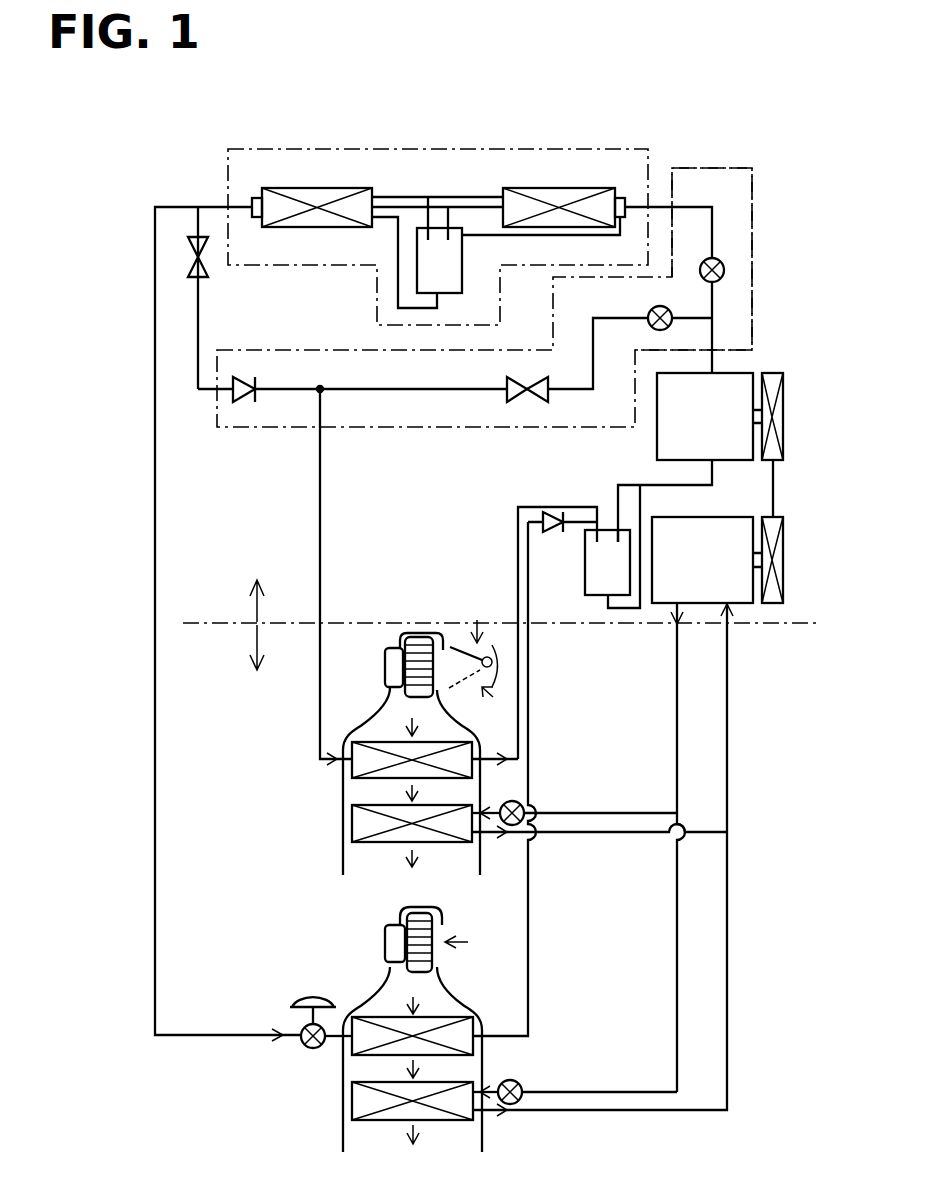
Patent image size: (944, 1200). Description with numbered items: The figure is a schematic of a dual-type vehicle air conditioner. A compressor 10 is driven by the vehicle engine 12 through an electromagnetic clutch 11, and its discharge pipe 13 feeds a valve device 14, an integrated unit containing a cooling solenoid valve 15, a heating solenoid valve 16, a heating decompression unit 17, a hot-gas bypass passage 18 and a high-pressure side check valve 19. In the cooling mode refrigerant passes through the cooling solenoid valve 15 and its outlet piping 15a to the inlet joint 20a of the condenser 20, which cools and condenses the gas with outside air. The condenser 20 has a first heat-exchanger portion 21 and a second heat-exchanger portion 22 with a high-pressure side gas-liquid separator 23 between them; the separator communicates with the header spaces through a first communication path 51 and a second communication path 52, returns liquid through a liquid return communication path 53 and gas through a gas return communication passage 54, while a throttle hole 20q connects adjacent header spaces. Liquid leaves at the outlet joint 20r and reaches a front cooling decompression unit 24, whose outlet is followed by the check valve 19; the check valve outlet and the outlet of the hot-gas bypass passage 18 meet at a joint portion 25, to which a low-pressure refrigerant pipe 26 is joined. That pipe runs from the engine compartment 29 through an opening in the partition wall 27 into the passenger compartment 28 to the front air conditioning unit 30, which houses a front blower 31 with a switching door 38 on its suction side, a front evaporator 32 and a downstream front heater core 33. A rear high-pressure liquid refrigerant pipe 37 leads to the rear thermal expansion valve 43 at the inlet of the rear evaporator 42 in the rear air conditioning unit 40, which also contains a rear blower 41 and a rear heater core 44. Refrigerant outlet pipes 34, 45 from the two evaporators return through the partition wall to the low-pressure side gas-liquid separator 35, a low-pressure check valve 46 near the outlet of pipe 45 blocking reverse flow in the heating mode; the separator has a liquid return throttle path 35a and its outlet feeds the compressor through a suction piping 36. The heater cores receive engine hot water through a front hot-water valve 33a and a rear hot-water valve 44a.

The compressor 10 is at (736, 370).
The electromagnetic clutch 11 is at (785, 430).
The vehicle engine 12 is at (737, 600).
The discharge pipe 13 is at (713, 352).
The valve device 14 is at (760, 198).
The cooling solenoid valve 15 is at (725, 270).
The outlet piping 15a is at (712, 237).
The heating solenoid valve 16 is at (660, 306).
The heating decompression unit 17 is at (530, 402).
The hot-gas bypass passage 18 is at (460, 392).
The high-pressure side check valve 19 is at (243, 398).
The condenser 20 is at (583, 140).
The inlet joint 20a is at (620, 197).
The throttle hole 20q is at (393, 196).
The outlet joint 20r is at (260, 197).
The first heat-exchanger portion 21 is at (555, 188).
The second heat-exchanger portion 22 is at (317, 188).
The high-pressure side gas-liquid separator 23 is at (468, 262).
The front cooling decompression unit 24 is at (188, 258).
The joint portion 25 is at (320, 392).
The low-pressure refrigerant pipe 26 is at (320, 483).
The partition wall 27 is at (206, 630).
The passenger compartment 28 is at (257, 665).
The engine compartment 29 is at (257, 583).
The front air conditioning unit 30 is at (330, 797).
The front blower 31 is at (387, 668).
The front evaporator 32 is at (363, 763).
The front heater core 33 is at (363, 825).
The front hot-water valve 33a is at (515, 803).
The front refrigerant outlet pipe 34 is at (530, 735).
The low-pressure side gas-liquid separator 35 is at (585, 560).
The liquid return throttle path 35a is at (608, 603).
The suction piping 36 is at (663, 485).
The rear high-pressure liquid refrigerant pipe 37 is at (155, 452).
The switching door 38 is at (458, 640).
The rear air conditioning unit 40 is at (332, 1085).
The rear blower 41 is at (430, 953).
The rear evaporator 42 is at (363, 1040).
The rear thermal expansion valve 43 is at (299, 1030).
The rear heater core 44 is at (357, 1102).
The rear hot-water valve 44a is at (522, 1083).
The rear refrigerant outlet pipe 45 is at (530, 885).
The low-pressure check valve 46 is at (555, 507).
The first communication path 51 is at (493, 235).
The second communication path 52 is at (450, 245).
The liquid return communication path 53 is at (398, 250).
The gas return communication passage 54 is at (427, 240).